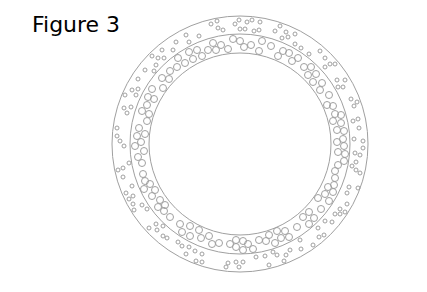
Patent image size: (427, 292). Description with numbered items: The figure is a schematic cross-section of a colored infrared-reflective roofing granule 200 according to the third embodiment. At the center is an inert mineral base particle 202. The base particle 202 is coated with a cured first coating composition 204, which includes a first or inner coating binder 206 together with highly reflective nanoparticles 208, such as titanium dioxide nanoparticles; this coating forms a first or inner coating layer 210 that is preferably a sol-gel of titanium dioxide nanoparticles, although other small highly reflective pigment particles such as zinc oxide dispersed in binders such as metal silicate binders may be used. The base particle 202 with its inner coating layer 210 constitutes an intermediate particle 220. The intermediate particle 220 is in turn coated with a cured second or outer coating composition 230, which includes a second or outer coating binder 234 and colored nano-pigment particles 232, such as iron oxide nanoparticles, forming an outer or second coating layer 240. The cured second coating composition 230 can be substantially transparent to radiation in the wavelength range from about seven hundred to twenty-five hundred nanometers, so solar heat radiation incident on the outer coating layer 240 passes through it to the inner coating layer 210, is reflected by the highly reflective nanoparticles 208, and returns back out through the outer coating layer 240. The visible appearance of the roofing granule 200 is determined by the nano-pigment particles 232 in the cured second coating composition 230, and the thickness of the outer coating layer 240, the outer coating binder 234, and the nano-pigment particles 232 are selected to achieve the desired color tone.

The colored infrared-reflective roofing granule 200 is at (90, 93).
The inert mineral base particle 202 is at (247, 141).
The cured first coating composition 204 is at (288, 43).
The first or inner coating binder 206 is at (330, 168).
The highly reflective nanoparticles 208 is at (305, 210).
The first or inner coating layer 210 is at (337, 168).
The intermediate particle 220 is at (335, 105).
The cured second or outer coating composition 230 is at (116, 176).
The colored nano-pigment particles 232 is at (180, 253).
The second or outer coating binder 234 is at (322, 232).
The outer or second coating layer 240 is at (305, 248).